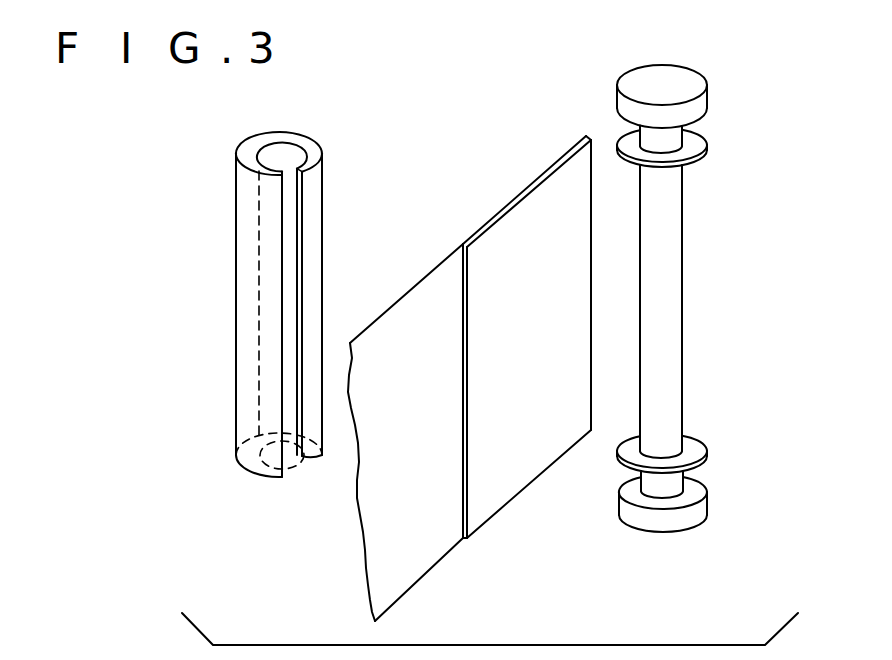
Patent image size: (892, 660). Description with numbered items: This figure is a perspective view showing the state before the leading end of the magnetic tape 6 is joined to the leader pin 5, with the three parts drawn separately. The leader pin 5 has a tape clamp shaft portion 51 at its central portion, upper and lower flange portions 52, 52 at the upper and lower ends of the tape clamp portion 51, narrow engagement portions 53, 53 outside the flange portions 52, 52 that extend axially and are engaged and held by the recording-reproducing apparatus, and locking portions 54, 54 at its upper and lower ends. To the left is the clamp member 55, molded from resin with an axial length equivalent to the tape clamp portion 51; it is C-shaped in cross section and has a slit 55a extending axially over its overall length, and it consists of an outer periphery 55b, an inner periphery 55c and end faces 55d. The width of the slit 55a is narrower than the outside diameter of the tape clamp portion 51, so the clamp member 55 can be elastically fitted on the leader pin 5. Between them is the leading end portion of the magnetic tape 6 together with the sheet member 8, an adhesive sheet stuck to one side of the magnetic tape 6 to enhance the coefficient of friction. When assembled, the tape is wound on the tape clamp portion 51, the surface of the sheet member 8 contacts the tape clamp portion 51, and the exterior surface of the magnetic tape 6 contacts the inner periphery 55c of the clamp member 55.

The leader pin 5 is at (457, 100).
The magnetic tape 6 is at (434, 285).
The sheet member 8 is at (525, 455).
The tape clamp shaft portion 51 is at (687, 298).
The flange portions 52 is at (697, 165).
The engagement portions 53 is at (673, 138).
The locking portions 54 is at (623, 87).
The clamp member 55 is at (313, 135).
The slit 55a is at (307, 235).
The outer periphery 55b is at (243, 276).
The inner periphery 55c is at (292, 288).
The end faces 55d is at (248, 150).